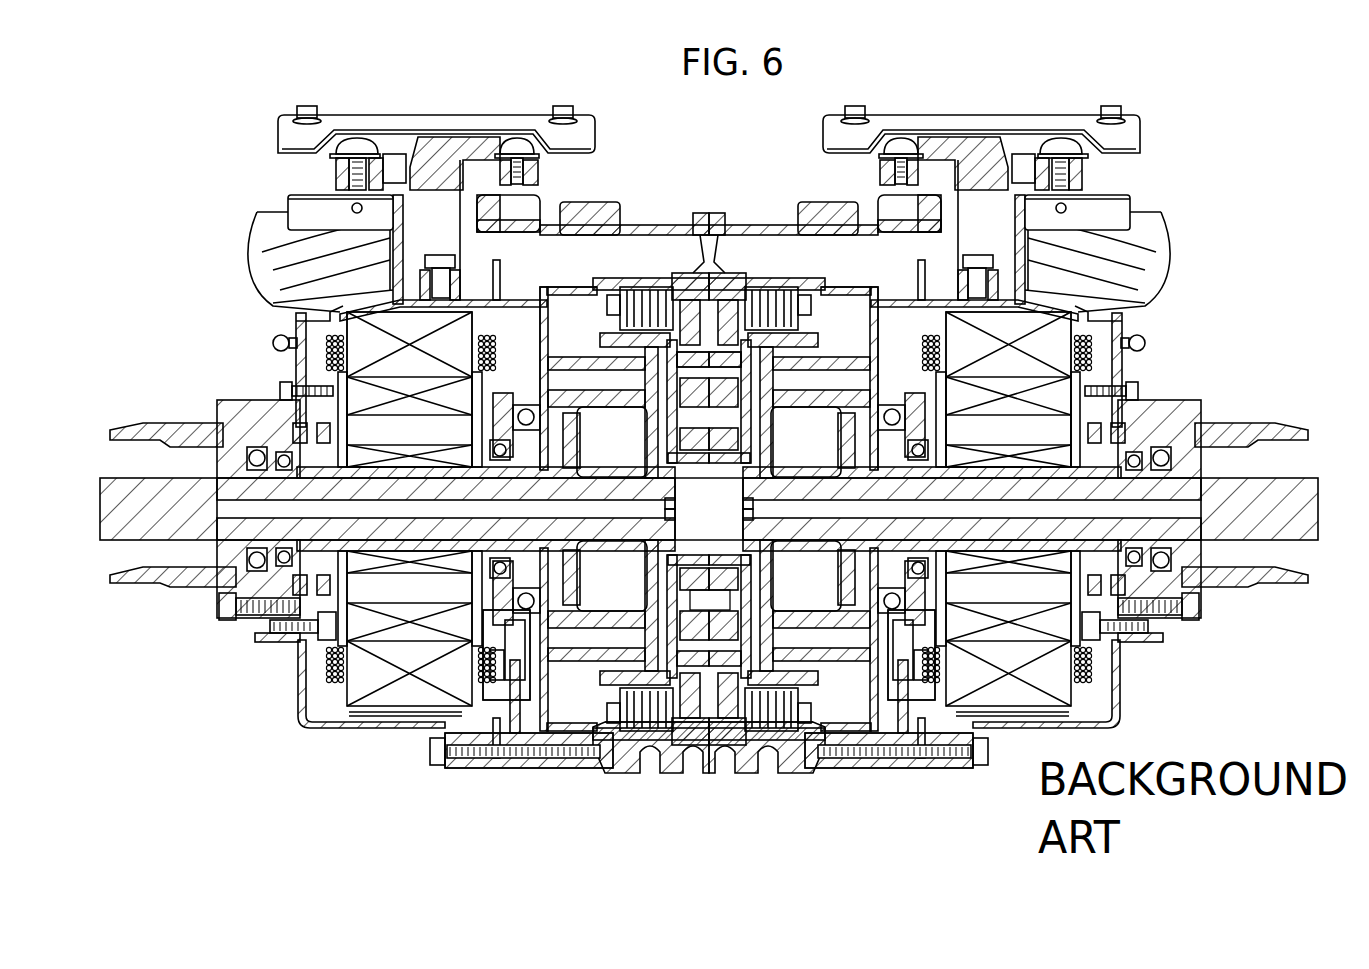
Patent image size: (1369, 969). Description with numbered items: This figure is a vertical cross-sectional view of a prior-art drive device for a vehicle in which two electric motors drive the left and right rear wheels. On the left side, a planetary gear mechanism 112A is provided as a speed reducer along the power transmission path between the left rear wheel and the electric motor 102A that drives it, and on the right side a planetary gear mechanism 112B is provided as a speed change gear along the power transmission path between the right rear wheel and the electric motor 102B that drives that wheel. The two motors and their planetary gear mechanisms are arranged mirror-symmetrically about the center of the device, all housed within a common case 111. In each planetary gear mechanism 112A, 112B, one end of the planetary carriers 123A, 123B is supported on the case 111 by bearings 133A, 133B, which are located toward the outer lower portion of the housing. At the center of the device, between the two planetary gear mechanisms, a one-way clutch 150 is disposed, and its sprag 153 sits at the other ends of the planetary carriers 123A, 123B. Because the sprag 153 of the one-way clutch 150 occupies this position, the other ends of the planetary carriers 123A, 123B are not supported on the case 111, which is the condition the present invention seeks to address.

The electric motor 102A is at (340, 308).
The electric motor 102B is at (1078, 308).
The planetary gear mechanism 112A is at (557, 280).
The planetary gear mechanism 112B is at (861, 280).
The one-way clutch 150 is at (711, 362).
The sprag 153 is at (712, 600).
The planetary carrier 123A is at (560, 672).
The planetary carrier 123B is at (858, 672).
The bearing 133A is at (530, 598).
The bearing 133B is at (888, 598).
The case 111 is at (584, 792).